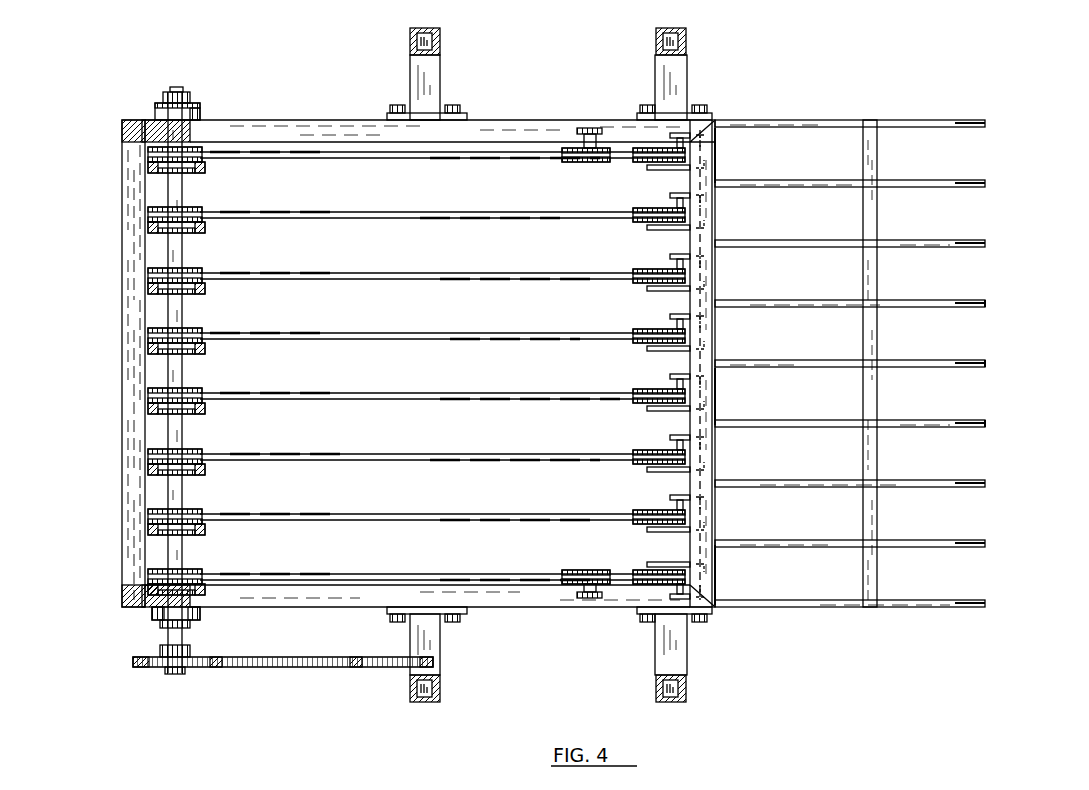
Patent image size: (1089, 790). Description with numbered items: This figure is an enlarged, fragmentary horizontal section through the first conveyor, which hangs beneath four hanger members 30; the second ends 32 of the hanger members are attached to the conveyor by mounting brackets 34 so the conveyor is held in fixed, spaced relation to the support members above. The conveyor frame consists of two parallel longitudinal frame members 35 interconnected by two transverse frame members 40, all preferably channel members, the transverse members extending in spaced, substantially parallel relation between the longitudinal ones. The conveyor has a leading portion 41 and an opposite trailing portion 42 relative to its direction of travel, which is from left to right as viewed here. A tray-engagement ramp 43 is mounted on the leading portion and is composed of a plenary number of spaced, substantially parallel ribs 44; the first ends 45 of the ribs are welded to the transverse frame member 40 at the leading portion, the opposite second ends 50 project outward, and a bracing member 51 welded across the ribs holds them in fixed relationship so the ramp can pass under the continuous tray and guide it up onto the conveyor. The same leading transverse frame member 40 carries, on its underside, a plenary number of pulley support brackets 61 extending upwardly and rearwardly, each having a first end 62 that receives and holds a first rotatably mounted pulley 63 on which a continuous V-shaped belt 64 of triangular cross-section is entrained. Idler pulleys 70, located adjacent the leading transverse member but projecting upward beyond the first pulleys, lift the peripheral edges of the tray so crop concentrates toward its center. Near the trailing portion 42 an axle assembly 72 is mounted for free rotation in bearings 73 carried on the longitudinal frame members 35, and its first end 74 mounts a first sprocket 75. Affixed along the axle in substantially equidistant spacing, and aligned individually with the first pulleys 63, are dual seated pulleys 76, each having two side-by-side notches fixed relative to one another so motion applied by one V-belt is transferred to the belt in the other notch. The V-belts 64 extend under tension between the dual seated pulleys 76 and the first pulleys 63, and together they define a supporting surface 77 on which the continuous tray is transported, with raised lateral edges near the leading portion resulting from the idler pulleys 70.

The hanger members 30 is at (440, 40).
The second ends 32 is at (440, 88).
The mounting bracket 34 is at (462, 112).
The longitudinal frame members 35 is at (525, 130).
The transverse frame members 40 is at (130, 415).
The leading portion 41 is at (722, 290).
The trailing portion 42 is at (108, 338).
The tray-engagement ramp 43 is at (1015, 288).
The ribs 44 is at (935, 303).
The first ends 45 is at (715, 185).
The second ends 50 is at (985, 425).
The bracing member 51 is at (877, 165).
The pulley support brackets 61 is at (648, 168).
The first end 62 is at (648, 289).
The first rotatably mounted pulley 63 is at (648, 228).
The V-shaped belt 64 is at (400, 333).
The idler pulleys 70 is at (578, 162).
The axle assembly 72 is at (202, 186).
The bearings 73 is at (200, 112).
The first end 74 is at (176, 674).
The first sprocket 75 is at (162, 667).
The dual seated pulleys 76 is at (158, 300).
The supporting surface 77 is at (311, 238).